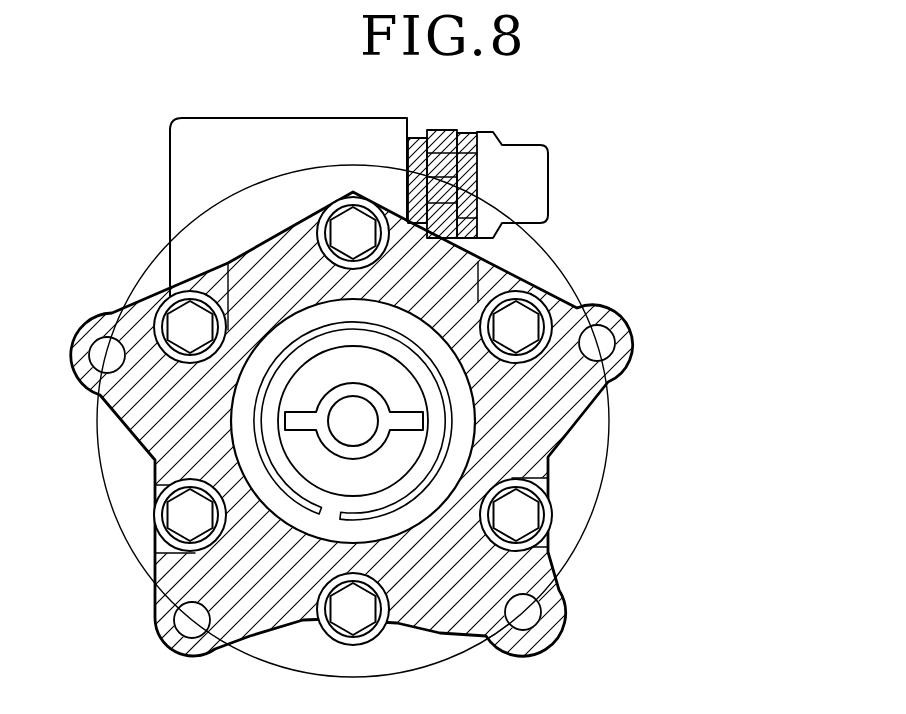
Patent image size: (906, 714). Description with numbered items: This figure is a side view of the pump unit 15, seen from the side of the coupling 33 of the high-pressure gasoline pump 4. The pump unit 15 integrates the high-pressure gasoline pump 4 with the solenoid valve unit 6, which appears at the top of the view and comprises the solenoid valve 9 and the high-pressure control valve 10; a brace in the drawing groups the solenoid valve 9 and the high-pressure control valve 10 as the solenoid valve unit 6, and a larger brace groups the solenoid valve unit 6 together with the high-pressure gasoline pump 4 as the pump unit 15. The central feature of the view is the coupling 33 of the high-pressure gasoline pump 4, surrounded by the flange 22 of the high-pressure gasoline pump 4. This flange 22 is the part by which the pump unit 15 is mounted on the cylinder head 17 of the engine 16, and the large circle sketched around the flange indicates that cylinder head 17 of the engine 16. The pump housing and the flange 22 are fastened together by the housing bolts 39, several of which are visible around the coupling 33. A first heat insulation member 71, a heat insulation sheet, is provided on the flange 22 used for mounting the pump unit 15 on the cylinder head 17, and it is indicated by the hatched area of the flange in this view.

The high-pressure gasoline pump 4 is at (584, 257).
The solenoid valve unit 6 is at (652, 103).
The solenoid valve 9 is at (537, 173).
The high-pressure control valve 10 is at (447, 129).
The pump unit 15 is at (742, 237).
The engine 16 is at (578, 553).
The cylinder head 17 is at (431, 421).
The flange 22 is at (615, 384).
The coupling 33 is at (322, 432).
The housing bolts 39 is at (196, 312).
The first heat insulation member 71 is at (573, 420).